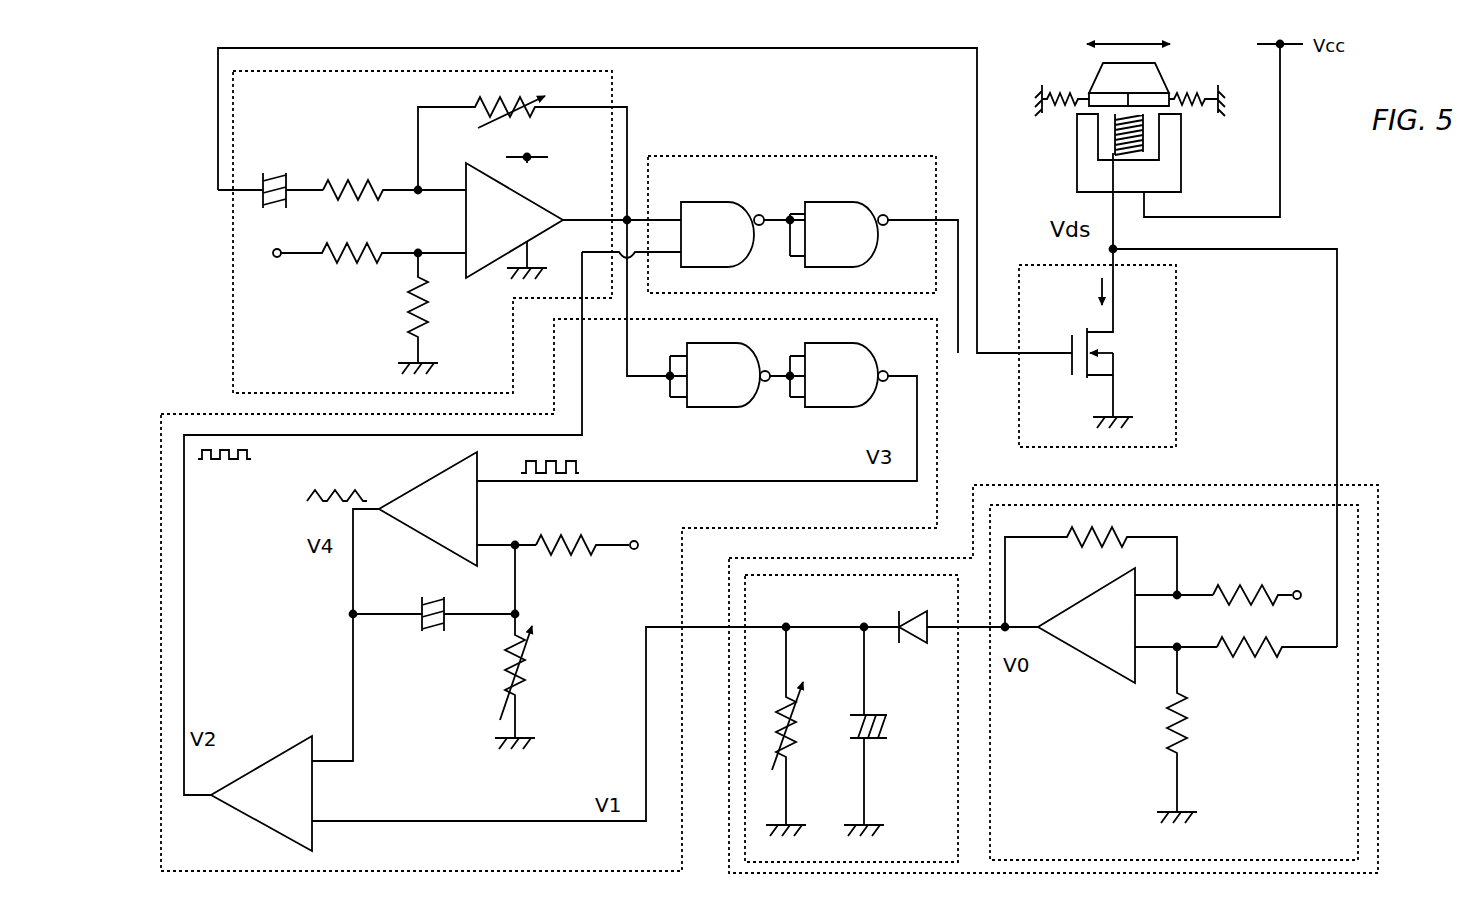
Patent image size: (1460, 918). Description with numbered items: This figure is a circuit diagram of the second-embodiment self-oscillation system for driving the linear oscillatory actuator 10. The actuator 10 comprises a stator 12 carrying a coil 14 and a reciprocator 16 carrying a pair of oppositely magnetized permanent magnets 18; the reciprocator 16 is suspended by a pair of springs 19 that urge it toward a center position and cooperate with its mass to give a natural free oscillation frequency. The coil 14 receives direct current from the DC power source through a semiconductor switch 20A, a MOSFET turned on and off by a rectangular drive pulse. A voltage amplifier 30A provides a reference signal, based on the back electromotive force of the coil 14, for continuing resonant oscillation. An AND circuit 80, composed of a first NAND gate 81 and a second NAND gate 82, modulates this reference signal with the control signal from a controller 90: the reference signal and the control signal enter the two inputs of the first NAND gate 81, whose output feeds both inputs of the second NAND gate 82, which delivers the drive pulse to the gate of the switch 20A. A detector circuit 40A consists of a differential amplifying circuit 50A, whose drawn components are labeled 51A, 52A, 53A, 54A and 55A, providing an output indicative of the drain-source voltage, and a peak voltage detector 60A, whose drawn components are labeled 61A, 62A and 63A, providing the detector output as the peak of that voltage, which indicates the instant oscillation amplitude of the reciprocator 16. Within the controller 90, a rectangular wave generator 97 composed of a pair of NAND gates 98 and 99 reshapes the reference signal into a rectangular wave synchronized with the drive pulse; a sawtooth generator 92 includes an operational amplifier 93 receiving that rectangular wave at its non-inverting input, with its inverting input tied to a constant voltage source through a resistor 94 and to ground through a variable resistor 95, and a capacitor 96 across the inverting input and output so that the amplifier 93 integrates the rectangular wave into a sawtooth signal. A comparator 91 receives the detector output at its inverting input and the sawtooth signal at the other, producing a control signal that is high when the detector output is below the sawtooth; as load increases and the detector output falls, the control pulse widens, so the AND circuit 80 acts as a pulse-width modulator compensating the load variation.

The linear oscillatory actuator 10 is at (1088, 70).
The stator 12 is at (1077, 150).
The coil 14 is at (1143, 128).
The reciprocator 16 is at (1165, 82).
The permanent magnets 18 is at (1100, 108).
The springs 19 is at (1198, 88).
The semiconductor switch 20A is at (1176, 326).
The voltage amplifier 30A is at (230, 228).
The detector circuit 40A is at (1380, 483).
The differential amplifying circuit 50A is at (1174, 682).
The operational amplifier 51A is at (1110, 625).
The resistor 52A is at (1242, 664).
The resistor 53A is at (1157, 725).
The resistor 54A is at (1238, 582).
The feedback resistor 55A is at (1092, 557).
The peak voltage detector 60A is at (851, 718).
The diode 61A is at (907, 646).
The capacitor 62A is at (893, 735).
The variable resistor 63A is at (805, 718).
The AND circuit 80 is at (792, 224).
The first NAND gate 81 is at (722, 234).
The second NAND gate 82 is at (826, 234).
The controller 90 is at (213, 411).
The comparator 91 is at (282, 793).
The sawtooth generator 92 is at (408, 478).
The operational amplifier 93 is at (424, 606).
The resistor 94 is at (560, 563).
The variable resistor 95 is at (530, 655).
The capacitor 96 is at (432, 636).
The rectangular wave generator 97 is at (775, 405).
The NAND gate 98 is at (719, 375).
The NAND gate 99 is at (829, 375).